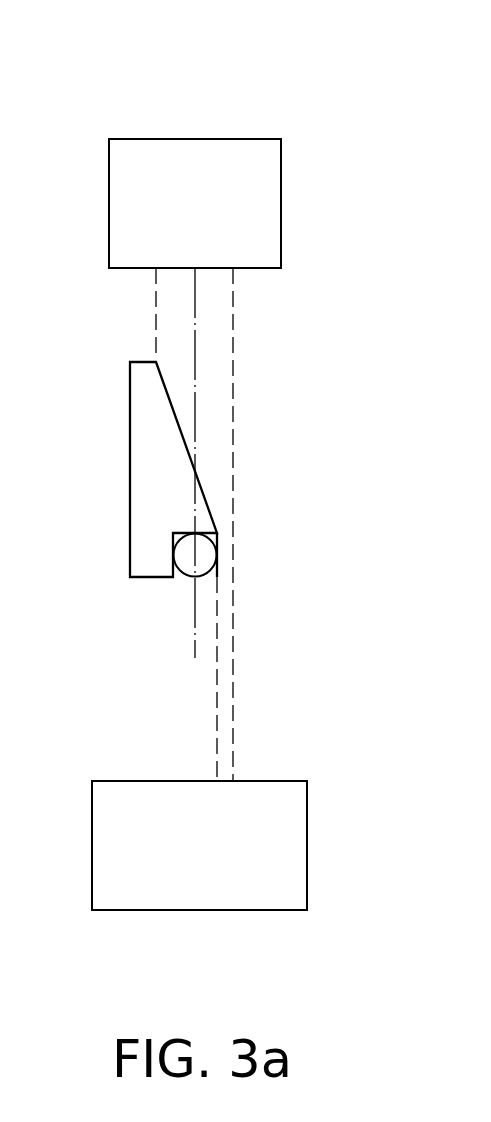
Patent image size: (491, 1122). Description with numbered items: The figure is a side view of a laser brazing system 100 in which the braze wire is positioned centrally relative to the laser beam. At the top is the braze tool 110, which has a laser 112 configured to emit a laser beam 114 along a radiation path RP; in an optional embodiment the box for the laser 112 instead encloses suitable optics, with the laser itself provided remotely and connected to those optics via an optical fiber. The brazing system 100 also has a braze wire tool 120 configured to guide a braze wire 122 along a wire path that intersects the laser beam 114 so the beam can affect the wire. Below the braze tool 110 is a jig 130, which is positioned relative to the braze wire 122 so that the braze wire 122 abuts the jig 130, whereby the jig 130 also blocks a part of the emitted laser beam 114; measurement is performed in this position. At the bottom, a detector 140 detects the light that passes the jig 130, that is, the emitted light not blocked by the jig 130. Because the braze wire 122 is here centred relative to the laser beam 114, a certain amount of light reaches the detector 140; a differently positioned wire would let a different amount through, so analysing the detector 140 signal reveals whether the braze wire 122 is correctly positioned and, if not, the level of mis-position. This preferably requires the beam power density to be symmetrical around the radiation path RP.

The laser brazing system 100 is at (309, 90).
The braze tool 110 is at (272, 203).
The laser 112 is at (281, 203).
The laser beam 114 is at (234, 382).
The braze wire tool 120 is at (282, 546).
The braze wire 122 is at (202, 557).
The jig 130 is at (130, 470).
The detector 140 is at (307, 845).
The radiation path RP is at (196, 622).